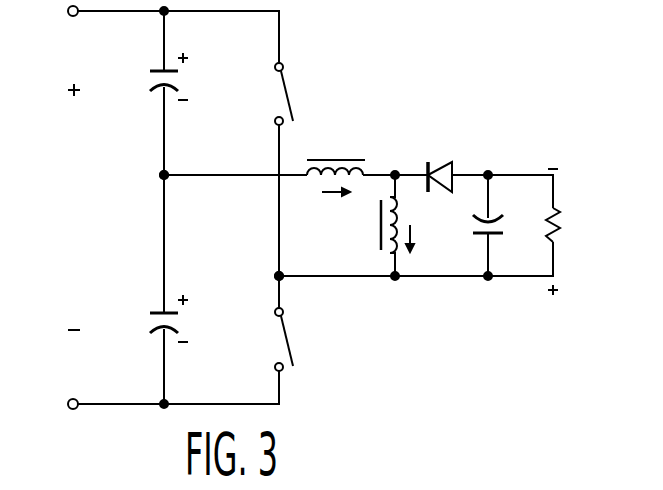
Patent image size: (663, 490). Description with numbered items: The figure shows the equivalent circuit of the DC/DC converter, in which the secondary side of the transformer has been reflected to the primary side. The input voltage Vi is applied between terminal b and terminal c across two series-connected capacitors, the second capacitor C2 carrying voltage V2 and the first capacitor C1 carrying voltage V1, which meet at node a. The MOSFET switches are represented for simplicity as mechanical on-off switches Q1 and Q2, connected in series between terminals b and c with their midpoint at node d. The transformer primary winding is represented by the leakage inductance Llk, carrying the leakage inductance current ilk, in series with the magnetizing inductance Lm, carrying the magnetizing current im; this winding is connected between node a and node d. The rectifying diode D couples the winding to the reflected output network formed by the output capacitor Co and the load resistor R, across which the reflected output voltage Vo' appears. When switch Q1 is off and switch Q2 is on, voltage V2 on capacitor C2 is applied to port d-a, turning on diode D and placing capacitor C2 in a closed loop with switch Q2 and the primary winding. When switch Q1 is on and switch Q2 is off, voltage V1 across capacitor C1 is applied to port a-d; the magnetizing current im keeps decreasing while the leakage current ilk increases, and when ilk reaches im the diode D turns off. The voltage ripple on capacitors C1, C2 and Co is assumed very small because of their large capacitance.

The node a is at (155, 173).
The input terminal b is at (73, 27).
The input terminal c is at (73, 390).
The node d is at (270, 275).
The input voltage Vi is at (74, 207).
The first capacitor C1 is at (148, 325).
The second capacitor C2 is at (148, 85).
The voltage across capacitor C1 V1 is at (194, 318).
The voltage on capacitor C2 V2 is at (194, 76).
The first switch Q1 is at (299, 339).
The second switch Q2 is at (299, 94).
The leakage inductance Llk is at (336, 155).
The leakage inductance current ilk is at (322, 192).
The magnetizing inductance Lm is at (373, 225).
The magnetizing current im is at (410, 224).
The rectifying diode D is at (440, 164).
The output capacitor Co is at (475, 225).
The load resistor R is at (545, 227).
The reflected output voltage Vo' is at (573, 232).